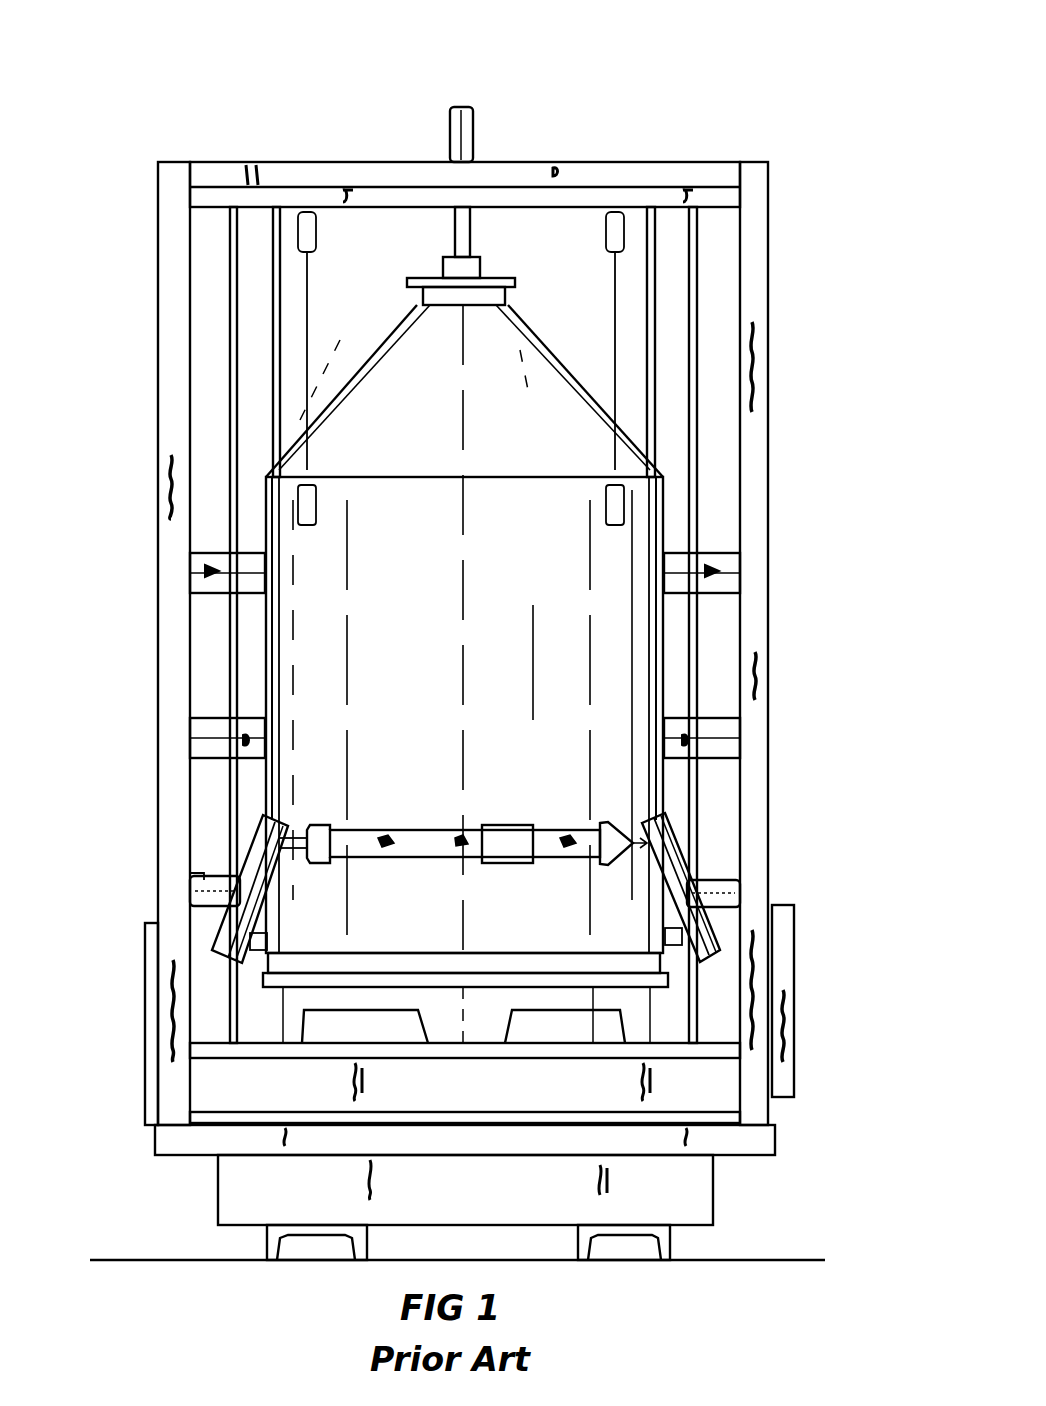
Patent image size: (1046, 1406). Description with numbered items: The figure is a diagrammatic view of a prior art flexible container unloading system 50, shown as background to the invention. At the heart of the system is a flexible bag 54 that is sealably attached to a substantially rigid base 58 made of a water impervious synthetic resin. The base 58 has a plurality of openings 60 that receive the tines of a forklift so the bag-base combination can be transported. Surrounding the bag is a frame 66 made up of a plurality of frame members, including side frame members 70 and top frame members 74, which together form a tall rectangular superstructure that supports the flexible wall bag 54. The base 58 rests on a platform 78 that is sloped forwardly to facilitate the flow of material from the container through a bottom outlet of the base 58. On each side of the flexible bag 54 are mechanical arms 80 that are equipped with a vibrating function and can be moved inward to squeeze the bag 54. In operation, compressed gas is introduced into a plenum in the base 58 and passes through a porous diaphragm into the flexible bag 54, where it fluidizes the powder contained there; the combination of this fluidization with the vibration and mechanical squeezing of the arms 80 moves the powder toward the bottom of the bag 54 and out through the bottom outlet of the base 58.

The flexible container unloading system 50 is at (673, 116).
The flexible bag 54 is at (618, 686).
The base 58 is at (664, 986).
The openings 60 is at (360, 1027).
The frame 66 is at (800, 287).
The side frame members 70 is at (158, 392).
The top frame members 74 is at (243, 160).
The platform 78 is at (153, 1140).
The mechanical arms 80 is at (218, 950).